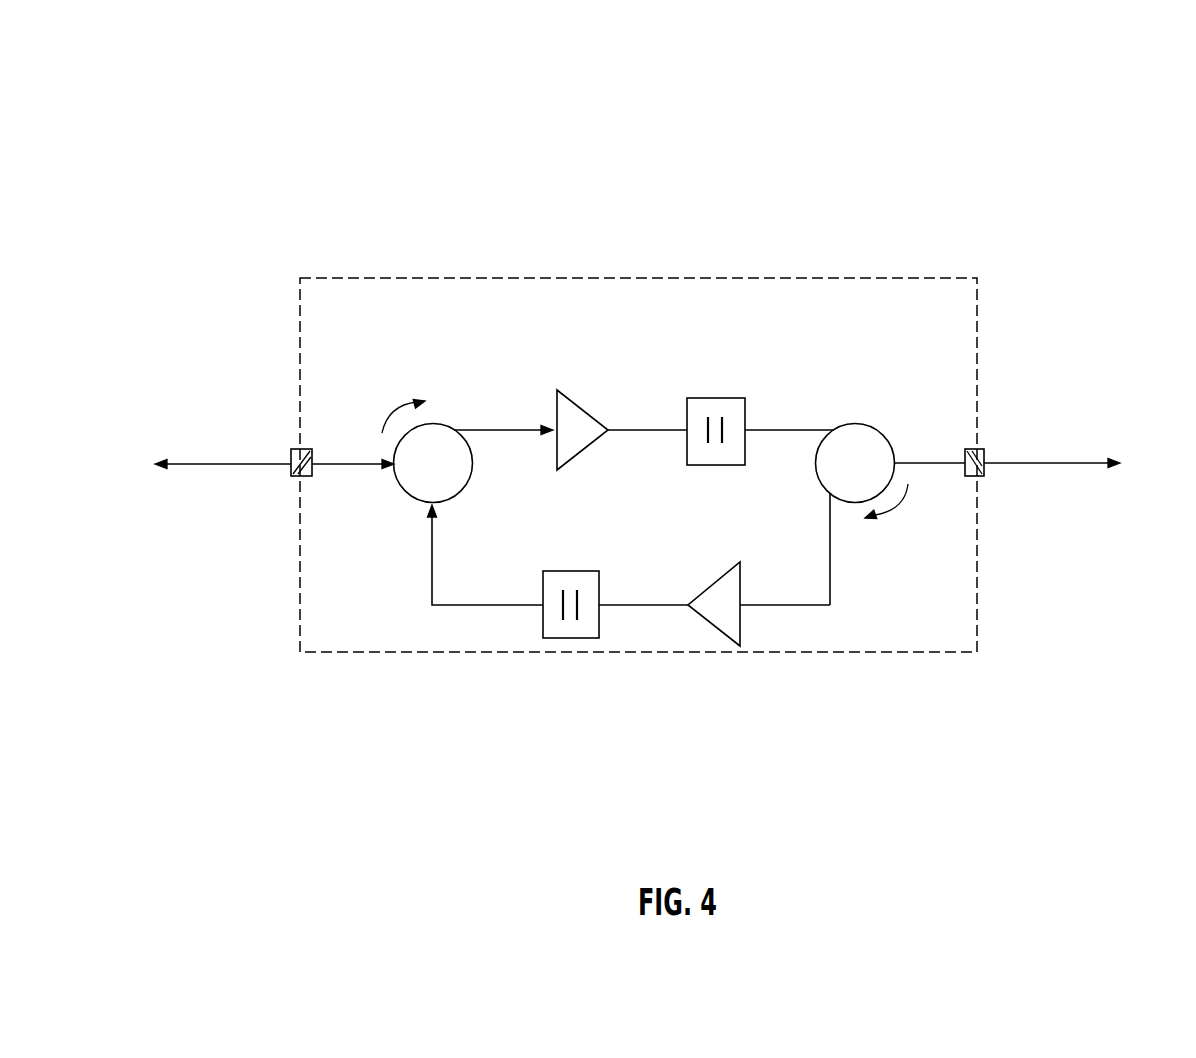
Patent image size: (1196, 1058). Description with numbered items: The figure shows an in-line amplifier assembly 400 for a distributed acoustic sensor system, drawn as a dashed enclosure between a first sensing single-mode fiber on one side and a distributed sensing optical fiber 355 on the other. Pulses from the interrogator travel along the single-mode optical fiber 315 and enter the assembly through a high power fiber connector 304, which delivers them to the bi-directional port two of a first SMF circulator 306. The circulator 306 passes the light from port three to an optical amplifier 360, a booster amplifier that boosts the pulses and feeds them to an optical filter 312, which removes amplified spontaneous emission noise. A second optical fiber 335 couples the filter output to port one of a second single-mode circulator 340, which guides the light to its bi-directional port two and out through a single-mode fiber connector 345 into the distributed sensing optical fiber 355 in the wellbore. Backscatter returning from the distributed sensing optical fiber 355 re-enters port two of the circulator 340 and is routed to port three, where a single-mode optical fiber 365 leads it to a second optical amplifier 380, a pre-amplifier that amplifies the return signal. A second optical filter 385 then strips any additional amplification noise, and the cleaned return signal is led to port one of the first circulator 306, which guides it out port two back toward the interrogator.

The in-line amplifier assembly 400 is at (1104, 62).
The high power fiber connector 304 is at (303, 449).
The first SMF circulator 306 is at (437, 422).
The optical filter 312 is at (704, 398).
The single-mode optical fiber 315 is at (222, 466).
The second optical fiber 335 is at (783, 430).
The second single-mode circulator 340 is at (860, 424).
The single-mode fiber connector 345 is at (977, 449).
The distributed sensing optical fiber 355 is at (1022, 463).
The optical amplifier 360 is at (583, 410).
The single-mode optical fiber 365 is at (458, 605).
The second optical amplifier 380 is at (716, 625).
The second optical filter 385 is at (578, 639).